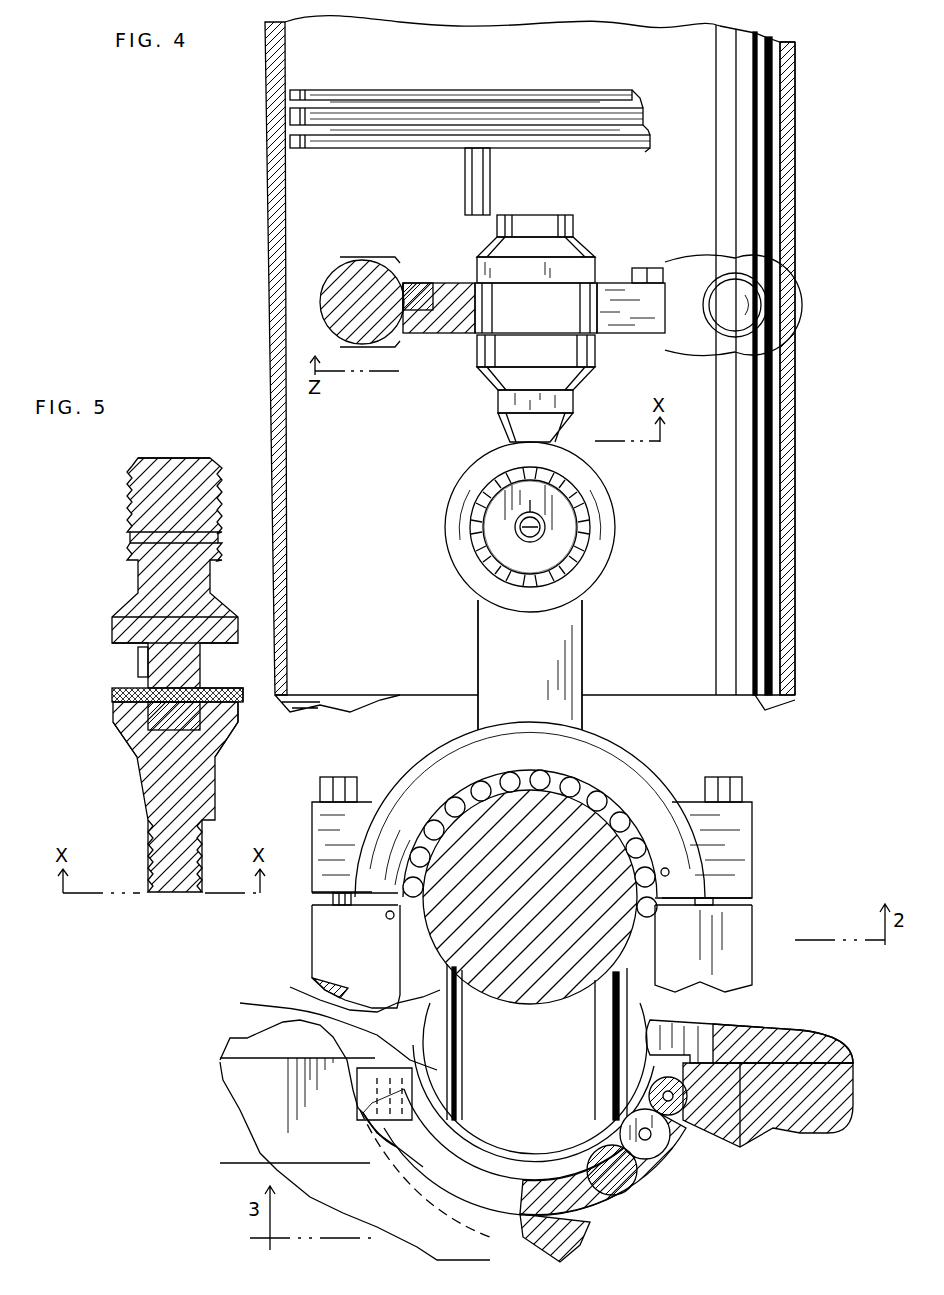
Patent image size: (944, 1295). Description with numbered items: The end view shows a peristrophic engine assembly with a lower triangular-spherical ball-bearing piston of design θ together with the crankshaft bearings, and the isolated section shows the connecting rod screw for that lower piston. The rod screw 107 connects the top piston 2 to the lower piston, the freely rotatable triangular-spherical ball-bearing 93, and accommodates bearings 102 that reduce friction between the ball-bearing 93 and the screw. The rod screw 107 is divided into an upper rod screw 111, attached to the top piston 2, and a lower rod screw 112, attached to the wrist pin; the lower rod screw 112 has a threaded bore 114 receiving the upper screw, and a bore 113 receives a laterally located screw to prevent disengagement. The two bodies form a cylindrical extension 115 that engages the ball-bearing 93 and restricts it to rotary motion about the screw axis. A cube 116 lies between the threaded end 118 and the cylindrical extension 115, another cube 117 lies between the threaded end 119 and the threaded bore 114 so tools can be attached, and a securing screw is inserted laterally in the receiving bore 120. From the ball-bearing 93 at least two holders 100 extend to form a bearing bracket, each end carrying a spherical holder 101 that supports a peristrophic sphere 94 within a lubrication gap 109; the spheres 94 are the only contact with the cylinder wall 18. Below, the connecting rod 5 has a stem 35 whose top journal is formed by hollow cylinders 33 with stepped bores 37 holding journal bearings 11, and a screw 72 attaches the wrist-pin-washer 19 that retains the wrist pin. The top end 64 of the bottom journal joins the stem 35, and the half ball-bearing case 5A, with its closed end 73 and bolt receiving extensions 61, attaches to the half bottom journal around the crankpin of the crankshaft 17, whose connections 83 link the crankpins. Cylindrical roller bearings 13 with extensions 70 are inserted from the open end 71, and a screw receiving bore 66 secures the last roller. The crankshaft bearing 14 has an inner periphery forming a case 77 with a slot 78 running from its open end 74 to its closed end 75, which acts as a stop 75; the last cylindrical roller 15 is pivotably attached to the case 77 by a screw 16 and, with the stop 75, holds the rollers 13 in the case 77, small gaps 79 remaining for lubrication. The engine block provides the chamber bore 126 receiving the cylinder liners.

In FIG. 4, the top piston 2 is at (542, 199).
In FIG. 4, the connecting rod 5 is at (532, 696).
In FIG. 4, the half ball-bearing case 5A is at (350, 974).
In FIG. 4, the journal bearings 11 is at (573, 492).
In FIG. 4, the cylindrical roller bearings 13 is at (620, 795).
In FIG. 4, the crankshaft bearing 14 is at (495, 1193).
In FIG. 4, the last cylindrical roller 15 is at (700, 807).
In FIG. 4, the screw 16 is at (697, 865).
In FIG. 4, the crankshaft 17 is at (530, 955).
In FIG. 4, the cylinder wall 18 is at (722, 487).
In FIG. 4, the wrist-pin-washer 19 is at (545, 572).
In FIG. 4, the hollow cylinders 33 is at (588, 555).
In FIG. 4, the stem 35 is at (572, 636).
In FIG. 4, the stepped bore 37 is at (497, 570).
In FIG. 4, the bolt receiving extensions 61 is at (735, 845).
In FIG. 4, the top end of the bottom journal 64 is at (612, 733).
In FIG. 4, the screw receiving bore 66 is at (667, 873).
In FIG. 4, the extension 70 is at (640, 1140).
In FIG. 4, the open end 71 is at (670, 887).
In FIG. 4, the wrist pin 72 is at (518, 527).
In FIG. 4, the closed end 73 is at (667, 923).
In FIG. 4, the open end of the case 74 is at (700, 1028).
In FIG. 4, the stop 75 is at (330, 1042).
In FIG. 4, the case 77 is at (365, 1122).
In FIG. 4, the slot 78 is at (600, 1178).
In FIG. 4, the small gap 79 is at (650, 1150).
In FIG. 4, the connections 83 is at (395, 1040).
In FIG. 4, the triangular-spherical ball-bearing 93 is at (546, 322).
In FIG. 4, the peristrophic sphere 94 is at (830, 380).
In FIG. 4, the holder 100 is at (465, 290).
In FIG. 4, the spherical holder 101 is at (702, 308).
In FIG. 5, the bearings 102 is at (120, 695).
In FIG. 4, the rod screw 107 is at (556, 362).
In FIG. 4, the lubrication gap 109 is at (393, 255).
In FIG. 4, the upper rod screw 111 is at (500, 250).
In FIG. 5, the upper rod screw 111 is at (175, 573).
In FIG. 5, the lower rod screw 112 is at (175, 797).
In FIG. 5, the bore 113 is at (240, 705).
In FIG. 5, the threaded bore 114 is at (205, 695).
In FIG. 5, the cylindrical extension 115 is at (137, 660).
In FIG. 4, the cube 116 is at (588, 265).
In FIG. 5, the cube 116 is at (112, 625).
In FIG. 5, the cube 117 is at (140, 758).
In FIG. 5, the threaded end 118 is at (127, 495).
In FIG. 5, the threaded end 119 is at (150, 842).
In FIG. 5, the receiving bore 120 is at (140, 538).
In FIG. 4, the chamber bore 126 is at (830, 1045).